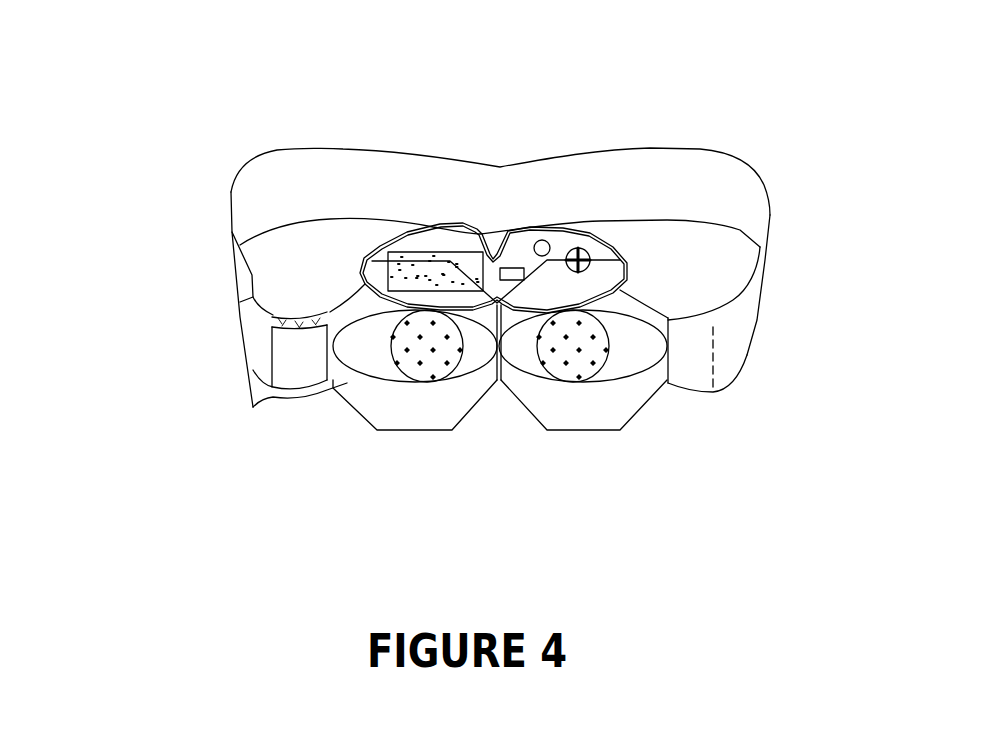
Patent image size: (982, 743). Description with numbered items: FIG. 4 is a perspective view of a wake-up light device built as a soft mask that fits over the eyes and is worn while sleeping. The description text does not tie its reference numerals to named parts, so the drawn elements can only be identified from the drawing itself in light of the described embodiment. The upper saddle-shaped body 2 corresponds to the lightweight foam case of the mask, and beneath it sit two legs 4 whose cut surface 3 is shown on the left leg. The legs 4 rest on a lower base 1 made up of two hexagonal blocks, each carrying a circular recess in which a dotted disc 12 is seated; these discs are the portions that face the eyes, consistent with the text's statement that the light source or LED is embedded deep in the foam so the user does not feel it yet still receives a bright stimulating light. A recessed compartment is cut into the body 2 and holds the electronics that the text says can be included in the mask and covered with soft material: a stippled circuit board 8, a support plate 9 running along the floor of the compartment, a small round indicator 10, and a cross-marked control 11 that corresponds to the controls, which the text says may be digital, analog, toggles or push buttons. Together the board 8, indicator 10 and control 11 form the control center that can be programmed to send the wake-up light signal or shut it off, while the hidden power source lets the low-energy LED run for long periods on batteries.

The base 1 is at (613, 437).
The body 2 is at (253, 200).
The leg cut surface 3 is at (260, 325).
The legs 4 is at (670, 315).
The circuit board 8 is at (430, 243).
The support plate 9 is at (507, 302).
The indicator light 10 is at (553, 237).
The switch 11 is at (588, 254).
The magnets 12 is at (558, 350).